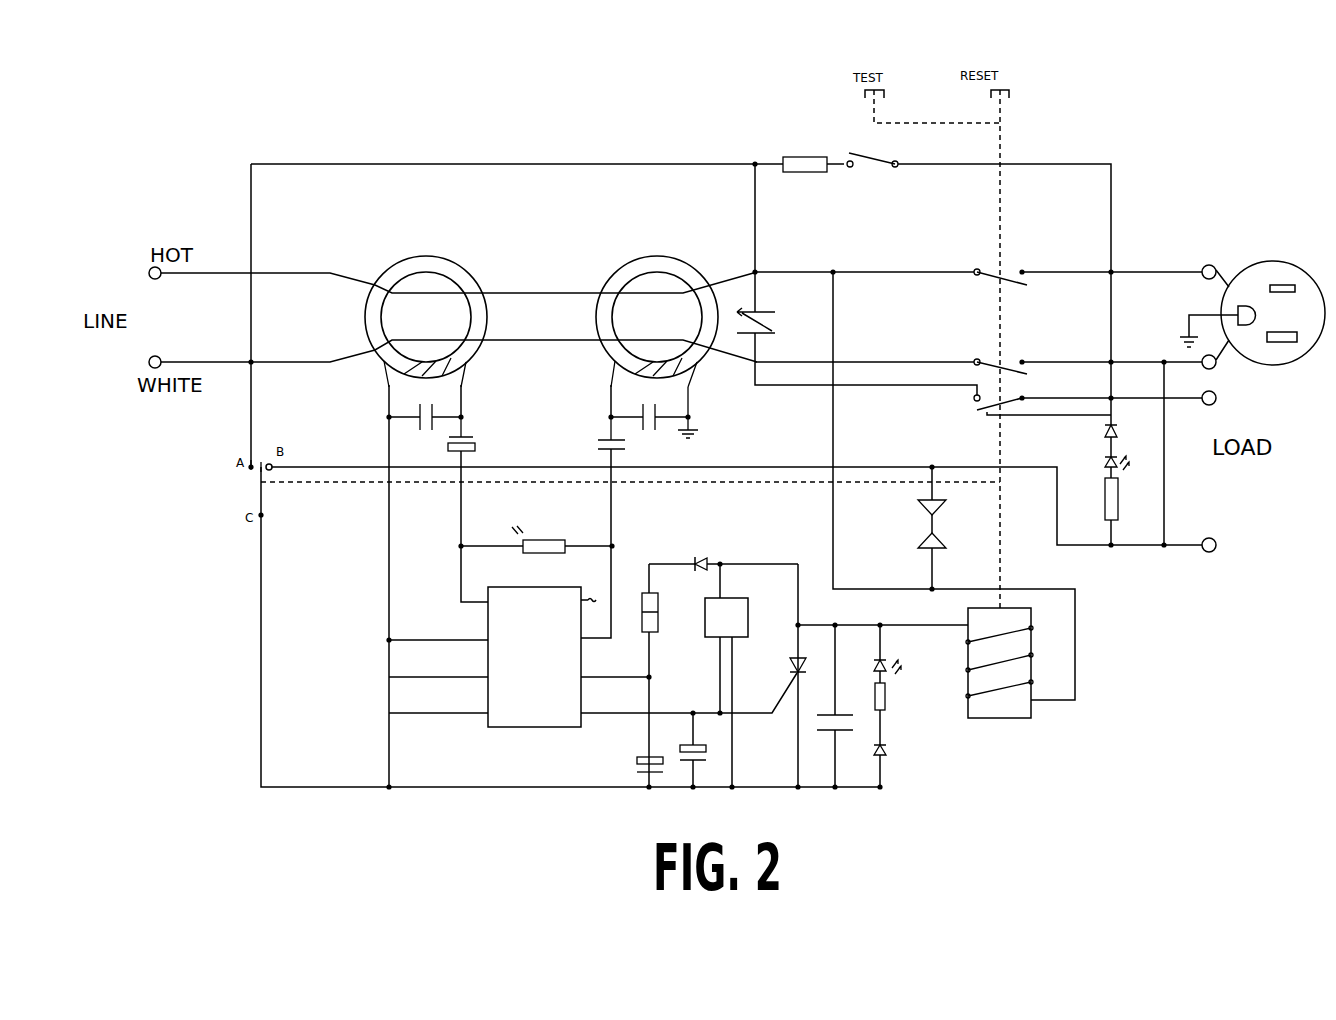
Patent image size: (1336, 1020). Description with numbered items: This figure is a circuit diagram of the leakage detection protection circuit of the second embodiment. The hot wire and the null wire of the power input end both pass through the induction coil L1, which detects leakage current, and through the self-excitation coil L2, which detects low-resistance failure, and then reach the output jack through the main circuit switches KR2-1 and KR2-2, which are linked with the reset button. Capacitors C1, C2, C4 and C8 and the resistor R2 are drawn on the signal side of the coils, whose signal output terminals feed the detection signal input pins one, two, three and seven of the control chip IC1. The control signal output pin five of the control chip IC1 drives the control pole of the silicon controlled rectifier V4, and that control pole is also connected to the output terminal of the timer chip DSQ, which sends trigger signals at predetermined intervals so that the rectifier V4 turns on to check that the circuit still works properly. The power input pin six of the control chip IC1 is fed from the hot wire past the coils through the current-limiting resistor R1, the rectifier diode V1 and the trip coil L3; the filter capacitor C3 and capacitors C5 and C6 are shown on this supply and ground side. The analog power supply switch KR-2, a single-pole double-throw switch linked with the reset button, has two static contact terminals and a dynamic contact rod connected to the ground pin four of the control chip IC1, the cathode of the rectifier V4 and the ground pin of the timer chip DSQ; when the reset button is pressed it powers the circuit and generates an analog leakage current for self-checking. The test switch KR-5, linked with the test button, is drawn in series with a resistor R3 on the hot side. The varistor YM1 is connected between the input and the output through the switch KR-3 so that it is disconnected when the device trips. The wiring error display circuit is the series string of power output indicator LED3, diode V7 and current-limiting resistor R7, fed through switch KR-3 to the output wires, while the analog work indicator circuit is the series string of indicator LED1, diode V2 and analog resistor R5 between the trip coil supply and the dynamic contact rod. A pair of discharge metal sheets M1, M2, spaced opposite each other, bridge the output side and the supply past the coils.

The induction coil L1 is at (426, 312).
The self-excitation coil L2 is at (657, 312).
The capacitor C1 is at (424, 411).
The capacitor C2 is at (653, 412).
The capacitor C4 is at (473, 434).
The capacitor C8 is at (622, 437).
The resistor R2 is at (536, 539).
The control chip IC1 is at (593, 657).
The current limiting resistor R1 is at (662, 675).
The rectifier diode V1 is at (723, 557).
The timer chip DSQ is at (725, 675).
The SCR V4 is at (861, 675).
The filter capacitor C3 is at (634, 766).
The capacitor C5 is at (696, 750).
The capacitor C6 is at (829, 706).
The indicator LED1 is at (871, 654).
The analog resistor R5 is at (868, 714).
The diode V2 is at (868, 765).
The discharge metal sheet M1 is at (923, 500).
The discharge metal sheet M2 is at (924, 561).
The solenoid coil SOL L3 is at (999, 677).
The test resistor R3 is at (805, 155).
The test switch KR-5 is at (876, 154).
The main circuit switch KR2-1 is at (978, 270).
The main circuit switch KR2-2 is at (978, 359).
The switch linked with the reset button KR-3 is at (1067, 405).
The analog power supply switch KR-2 is at (276, 482).
The metal oxide varistor MOV YM1 is at (776, 321).
The diode V7 is at (1119, 440).
The power output indicator LED3 is at (1128, 472).
The current-limiting resistor R7 is at (1121, 511).